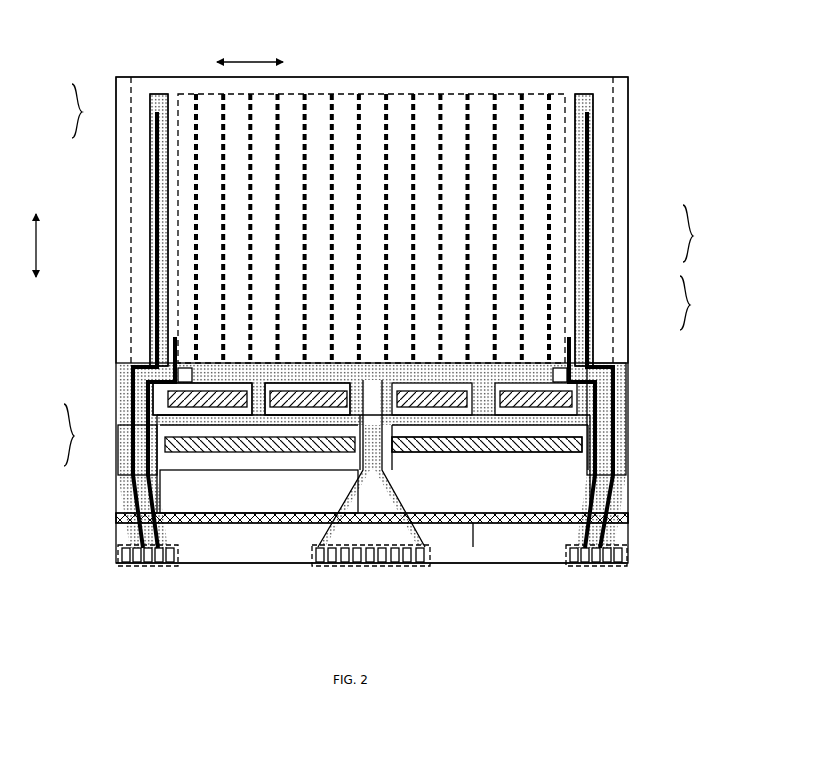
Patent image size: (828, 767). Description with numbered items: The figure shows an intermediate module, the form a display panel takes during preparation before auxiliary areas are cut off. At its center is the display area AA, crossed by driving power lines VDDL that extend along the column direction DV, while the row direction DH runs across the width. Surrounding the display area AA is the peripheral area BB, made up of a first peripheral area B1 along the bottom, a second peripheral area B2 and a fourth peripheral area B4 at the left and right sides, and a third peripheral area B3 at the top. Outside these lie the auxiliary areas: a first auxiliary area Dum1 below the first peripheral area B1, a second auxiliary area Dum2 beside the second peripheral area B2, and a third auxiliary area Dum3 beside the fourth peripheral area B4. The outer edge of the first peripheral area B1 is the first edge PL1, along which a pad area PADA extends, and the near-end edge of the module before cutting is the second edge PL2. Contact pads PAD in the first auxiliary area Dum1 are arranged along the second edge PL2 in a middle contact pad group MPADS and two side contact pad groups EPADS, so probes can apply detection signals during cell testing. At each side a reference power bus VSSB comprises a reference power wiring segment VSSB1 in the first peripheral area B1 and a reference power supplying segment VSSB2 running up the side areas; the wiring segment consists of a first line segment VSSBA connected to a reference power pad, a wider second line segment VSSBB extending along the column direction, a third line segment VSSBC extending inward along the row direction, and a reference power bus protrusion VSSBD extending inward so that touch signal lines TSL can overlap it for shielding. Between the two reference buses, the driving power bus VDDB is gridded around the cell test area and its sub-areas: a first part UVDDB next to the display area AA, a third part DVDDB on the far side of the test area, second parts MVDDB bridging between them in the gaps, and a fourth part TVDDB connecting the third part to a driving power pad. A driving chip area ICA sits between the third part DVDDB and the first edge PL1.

The first peripheral area B1 is at (265, 495).
The second peripheral area B2 is at (146, 225).
The third peripheral area B3 is at (322, 85).
The fourth peripheral area B4 is at (600, 102).
The peripheral area BB is at (79, 110).
The first auxiliary area Dum1 is at (473, 548).
The second auxiliary area Dum2 is at (127, 188).
The third auxiliary area Dum3 is at (617, 148).
The column direction DV is at (48, 245).
The row direction DH is at (250, 53).
The display area AA is at (567, 100).
The driving power line VDDL is at (466, 102).
The reference power supplying segment VSSB2 is at (596, 153).
The touch signal line TSL is at (591, 185).
The reference power wiring segment VSSB1 is at (685, 302).
The reference power bus VSSB is at (684, 235).
The first line segment of the reference power bus VSSBA is at (620, 468).
The second line segment of the reference power bus VSSBB is at (620, 412).
The third line segment of the reference power bus VSSBC is at (617, 372).
The reference power bus protrusion VSSBD is at (186, 366).
The first part of the driving power bus UVDDB is at (233, 373).
The second part of the driving power bus MVDDB is at (257, 408).
The third part of the driving power bus DVDDB is at (287, 420).
The fourth part of the driving power bus TVDDB is at (162, 462).
The driving power bus VDDB is at (88, 435).
The side contact pad group EPADS is at (130, 572).
The middle contact pad group MPADS is at (345, 572).
The contact pad PAD is at (607, 566).
The first edge PL1 is at (205, 527).
The second edge PL2 is at (540, 570).
The pad area PADA is at (490, 527).
The driving chip area ICA is at (535, 455).